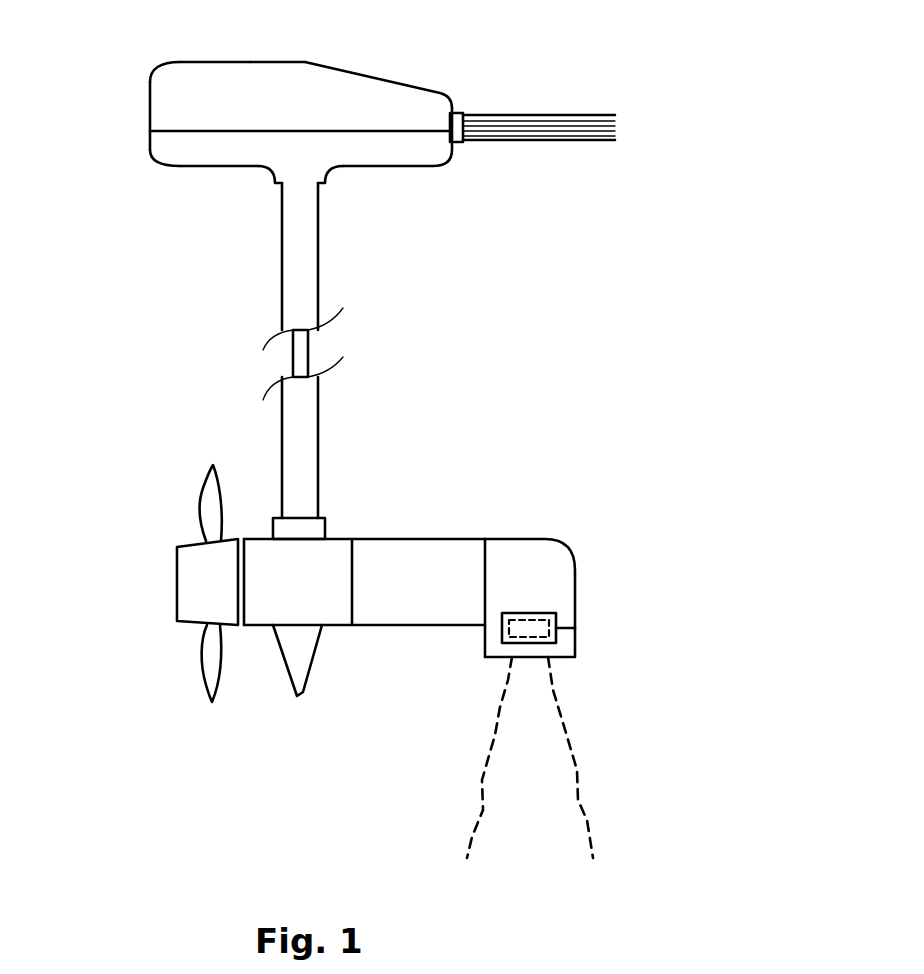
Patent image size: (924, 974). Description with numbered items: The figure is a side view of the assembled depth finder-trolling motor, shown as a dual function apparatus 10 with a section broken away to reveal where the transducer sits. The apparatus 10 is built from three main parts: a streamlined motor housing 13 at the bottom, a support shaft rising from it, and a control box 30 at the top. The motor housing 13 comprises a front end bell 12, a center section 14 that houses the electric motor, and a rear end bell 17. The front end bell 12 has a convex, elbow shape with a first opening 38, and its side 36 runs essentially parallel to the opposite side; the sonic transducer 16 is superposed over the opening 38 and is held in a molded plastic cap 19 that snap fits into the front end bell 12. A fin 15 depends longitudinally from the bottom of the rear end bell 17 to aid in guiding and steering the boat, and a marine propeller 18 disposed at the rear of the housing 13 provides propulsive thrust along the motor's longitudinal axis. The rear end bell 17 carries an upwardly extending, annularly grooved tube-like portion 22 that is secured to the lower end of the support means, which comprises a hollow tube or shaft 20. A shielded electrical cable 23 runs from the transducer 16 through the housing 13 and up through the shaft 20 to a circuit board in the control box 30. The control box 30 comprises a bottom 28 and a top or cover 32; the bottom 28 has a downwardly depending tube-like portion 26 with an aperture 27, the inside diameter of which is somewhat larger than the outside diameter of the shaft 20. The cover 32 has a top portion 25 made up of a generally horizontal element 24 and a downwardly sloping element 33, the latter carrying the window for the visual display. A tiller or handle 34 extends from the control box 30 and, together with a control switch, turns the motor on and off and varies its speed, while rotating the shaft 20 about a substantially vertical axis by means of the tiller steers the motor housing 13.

The dual function apparatus 10 is at (348, 440).
The front end bell 12 is at (553, 568).
The motor housing 13 is at (470, 532).
The center section 14 is at (418, 557).
The fin 15 is at (303, 668).
The sonic transducer 16 is at (330, 400).
The rear end bell 17 is at (295, 597).
The marine propeller 18 is at (213, 500).
The molded plastic cap 19 is at (553, 612).
The hollow tube or shaft 20 is at (297, 272).
The annularly grooved tube-like portion 22 is at (315, 530).
The shielded electrical cable 23 is at (303, 350).
The generally horizontal element 24 is at (205, 62).
The top portion 25 is at (285, 62).
The downwardly depending tube-like portion 26 is at (283, 175).
The aperture 27 is at (306, 185).
The bottom 28 is at (170, 145).
The control box 30 is at (148, 103).
The cover 32 is at (166, 90).
The downwardly sloping element 33 is at (413, 89).
The tiller or handle 34 is at (555, 116).
The side of front end bell 36 is at (558, 645).
The first opening 38 is at (525, 660).